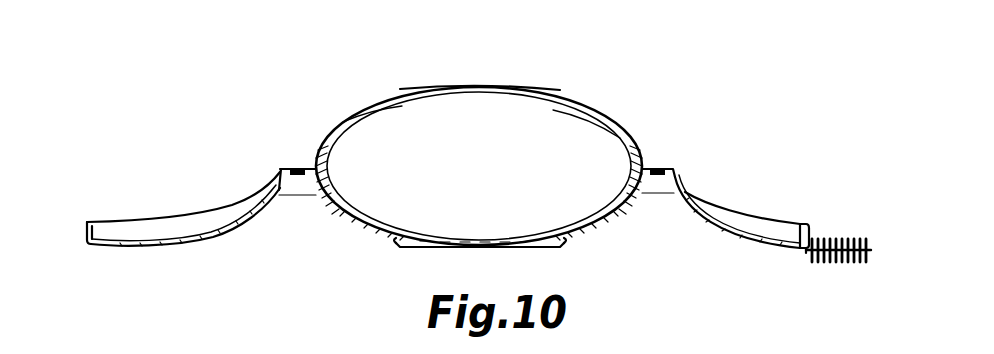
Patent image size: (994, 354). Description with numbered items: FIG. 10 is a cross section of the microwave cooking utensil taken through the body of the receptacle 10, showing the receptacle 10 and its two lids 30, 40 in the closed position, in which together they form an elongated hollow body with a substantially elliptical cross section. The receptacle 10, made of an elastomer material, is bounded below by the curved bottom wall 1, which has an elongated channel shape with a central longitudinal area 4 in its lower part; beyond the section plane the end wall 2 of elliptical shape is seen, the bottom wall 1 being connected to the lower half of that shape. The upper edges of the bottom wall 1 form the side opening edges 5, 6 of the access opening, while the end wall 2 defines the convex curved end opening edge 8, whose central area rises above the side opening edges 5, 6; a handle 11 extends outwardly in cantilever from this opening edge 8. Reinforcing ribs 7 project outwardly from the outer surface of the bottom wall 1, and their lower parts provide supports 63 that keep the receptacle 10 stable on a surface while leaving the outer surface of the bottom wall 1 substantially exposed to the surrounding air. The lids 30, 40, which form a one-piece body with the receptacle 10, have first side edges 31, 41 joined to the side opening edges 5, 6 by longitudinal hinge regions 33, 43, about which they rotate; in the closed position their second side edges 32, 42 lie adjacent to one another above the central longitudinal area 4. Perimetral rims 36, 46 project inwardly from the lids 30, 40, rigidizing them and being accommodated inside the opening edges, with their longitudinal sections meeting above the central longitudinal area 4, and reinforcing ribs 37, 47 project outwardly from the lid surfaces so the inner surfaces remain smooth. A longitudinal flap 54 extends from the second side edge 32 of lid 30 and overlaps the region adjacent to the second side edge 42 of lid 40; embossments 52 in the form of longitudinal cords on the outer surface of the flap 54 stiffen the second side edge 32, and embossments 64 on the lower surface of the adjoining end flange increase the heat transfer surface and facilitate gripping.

The bottom wall 1 is at (444, 242).
The end wall 2 is at (497, 168).
The central longitudinal area 4 is at (489, 239).
The side opening edge 5 is at (639, 140).
The side opening edge 6 is at (324, 138).
The reinforcing ribs 7 is at (371, 240).
The end opening edge 8 is at (486, 88).
The receptacle 10 is at (468, 175).
The handle 11 is at (517, 88).
The lid 30 is at (767, 202).
The first side edge 31 is at (686, 180).
The second side edge 32 is at (807, 243).
The hinge region 33 is at (666, 158).
The perimetral rim 36 is at (767, 222).
The reinforcing ribs 37 is at (721, 235).
The lid 40 is at (180, 209).
The first side edge 41 is at (278, 173).
The second side edge 42 is at (87, 241).
The hinge region 43 is at (295, 197).
The perimetral rim 46 is at (148, 228).
The reinforcing ribs 47 is at (232, 234).
The embossments 52 is at (812, 258).
The longitudinal flap 54 is at (849, 252).
The supports 63 is at (405, 249).
The embossments 64 is at (848, 241).